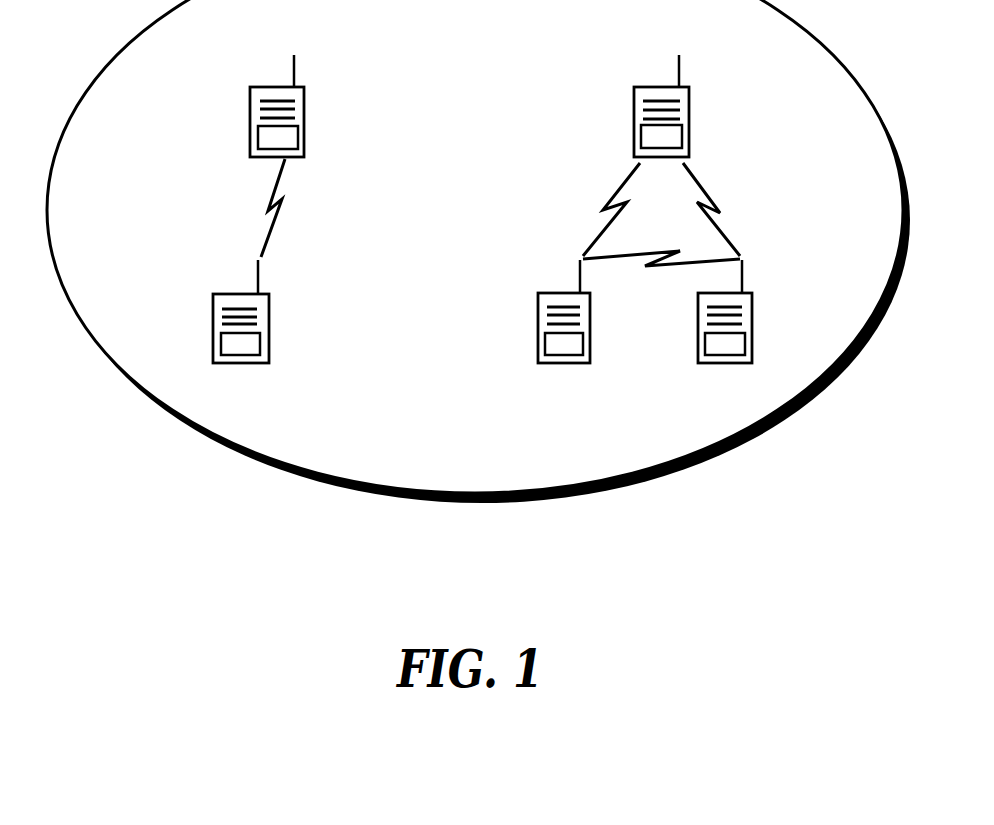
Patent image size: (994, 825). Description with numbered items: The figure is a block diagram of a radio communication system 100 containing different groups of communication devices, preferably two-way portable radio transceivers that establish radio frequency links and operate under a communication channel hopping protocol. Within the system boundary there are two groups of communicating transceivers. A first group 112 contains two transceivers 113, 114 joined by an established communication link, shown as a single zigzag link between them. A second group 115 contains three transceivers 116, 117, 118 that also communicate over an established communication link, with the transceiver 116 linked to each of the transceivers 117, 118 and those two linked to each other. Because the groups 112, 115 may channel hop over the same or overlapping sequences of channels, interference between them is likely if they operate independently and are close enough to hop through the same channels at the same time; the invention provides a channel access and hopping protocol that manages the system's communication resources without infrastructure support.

The radio communication system 100 is at (115, 495).
The first group 112 is at (183, 186).
The transceiver 113 is at (211, 304).
The transceiver 114 is at (249, 92).
The second group 115 is at (561, 197).
The transceiver 116 is at (695, 100).
The transceiver 117 is at (535, 313).
The transceiver 118 is at (755, 303).